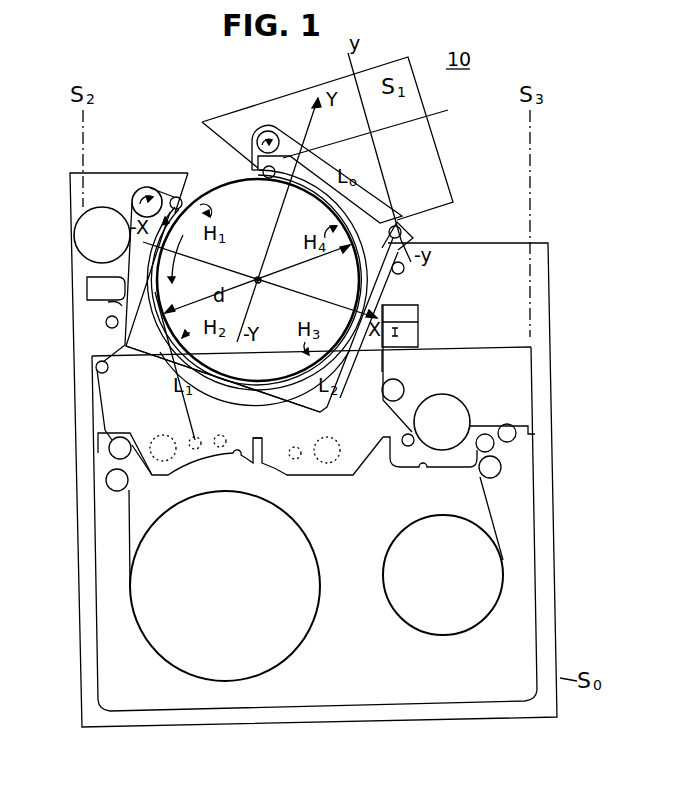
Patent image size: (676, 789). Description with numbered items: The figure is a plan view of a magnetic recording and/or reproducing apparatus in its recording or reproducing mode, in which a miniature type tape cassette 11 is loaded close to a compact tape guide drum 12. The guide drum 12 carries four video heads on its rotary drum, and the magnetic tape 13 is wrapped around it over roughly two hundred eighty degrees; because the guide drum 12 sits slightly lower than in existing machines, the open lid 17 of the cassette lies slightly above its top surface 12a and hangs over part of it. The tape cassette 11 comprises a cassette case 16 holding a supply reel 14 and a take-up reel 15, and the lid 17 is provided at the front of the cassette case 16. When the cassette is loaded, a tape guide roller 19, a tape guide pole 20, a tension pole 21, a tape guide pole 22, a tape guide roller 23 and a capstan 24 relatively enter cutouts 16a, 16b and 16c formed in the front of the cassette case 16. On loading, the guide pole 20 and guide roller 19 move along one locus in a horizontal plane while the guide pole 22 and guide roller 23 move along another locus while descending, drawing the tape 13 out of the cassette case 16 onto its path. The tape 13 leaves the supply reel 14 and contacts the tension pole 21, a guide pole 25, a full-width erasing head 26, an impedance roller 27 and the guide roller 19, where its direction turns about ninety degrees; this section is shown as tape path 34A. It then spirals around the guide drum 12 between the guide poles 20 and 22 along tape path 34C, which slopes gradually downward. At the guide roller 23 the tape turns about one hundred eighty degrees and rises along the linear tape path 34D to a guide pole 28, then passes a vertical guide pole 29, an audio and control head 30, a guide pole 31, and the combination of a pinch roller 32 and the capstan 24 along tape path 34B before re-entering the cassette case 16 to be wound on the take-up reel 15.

The miniature type tape cassette 11 is at (542, 540).
The tape guide drum 12 is at (400, 250).
The top surface of the guide drum 12a is at (306, 404).
The magnetic tape 13 is at (100, 346).
The supply reel 14 is at (320, 572).
The take-up reel 15 is at (392, 606).
The cassette case 16 is at (537, 590).
The cutout 16a is at (240, 460).
The cutout 16b is at (309, 478).
The cutout 16c is at (436, 470).
The lid 17 is at (535, 378).
The tape guide roller 19 is at (145, 188).
The tape guide pole 20 is at (176, 197).
The tension pole 21 is at (106, 373).
The tape guide pole 22 is at (267, 179).
The tape guide roller 23 is at (263, 131).
The capstan 24 is at (405, 448).
The guide pole 25 is at (105, 322).
The full-width erasing head 26 is at (88, 290).
The impedance roller 27 is at (78, 226).
The guide pole 28 is at (407, 229).
The vertical guide pole 29 is at (405, 270).
The audio and control head 30 is at (420, 322).
The guide pole 31 is at (405, 388).
The pinch roller 32 is at (456, 412).
The tape path 34A is at (112, 303).
The tape path 34B is at (385, 370).
The tape path 34C is at (250, 387).
The tape path 34D is at (386, 208).